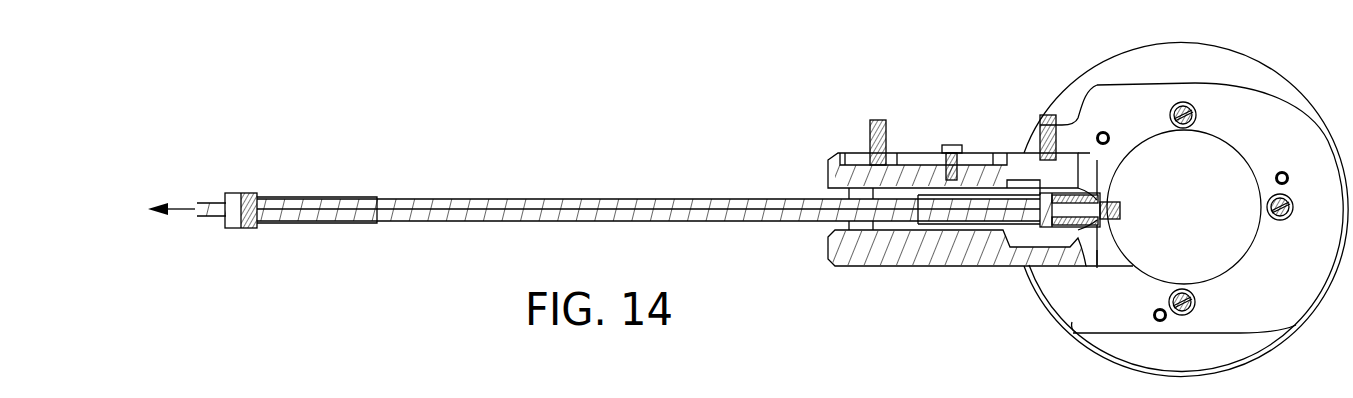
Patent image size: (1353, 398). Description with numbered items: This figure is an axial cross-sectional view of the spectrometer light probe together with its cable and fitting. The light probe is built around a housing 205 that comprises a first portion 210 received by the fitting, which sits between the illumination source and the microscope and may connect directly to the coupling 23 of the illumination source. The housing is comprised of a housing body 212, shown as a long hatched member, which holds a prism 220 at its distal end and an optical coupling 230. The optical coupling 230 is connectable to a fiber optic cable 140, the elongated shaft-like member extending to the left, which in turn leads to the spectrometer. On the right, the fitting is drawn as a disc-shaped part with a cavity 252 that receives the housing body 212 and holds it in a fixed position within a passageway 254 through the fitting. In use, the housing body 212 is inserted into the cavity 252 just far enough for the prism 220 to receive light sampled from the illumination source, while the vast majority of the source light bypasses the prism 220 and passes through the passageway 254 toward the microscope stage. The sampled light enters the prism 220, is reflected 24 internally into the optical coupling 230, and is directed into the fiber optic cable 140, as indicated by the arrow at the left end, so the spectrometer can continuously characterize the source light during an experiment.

The coupling 23 is at (1285, 78).
The reflected light 24 is at (180, 207).
The fiber optic cable 140 is at (472, 199).
The housing 205 is at (1013, 270).
The first portion 210 is at (830, 268).
The housing body 212 is at (888, 266).
The prism 220 is at (1115, 204).
The optical coupling 230 is at (1043, 207).
The cavity 252 is at (1095, 268).
The passageway 254 is at (1239, 154).